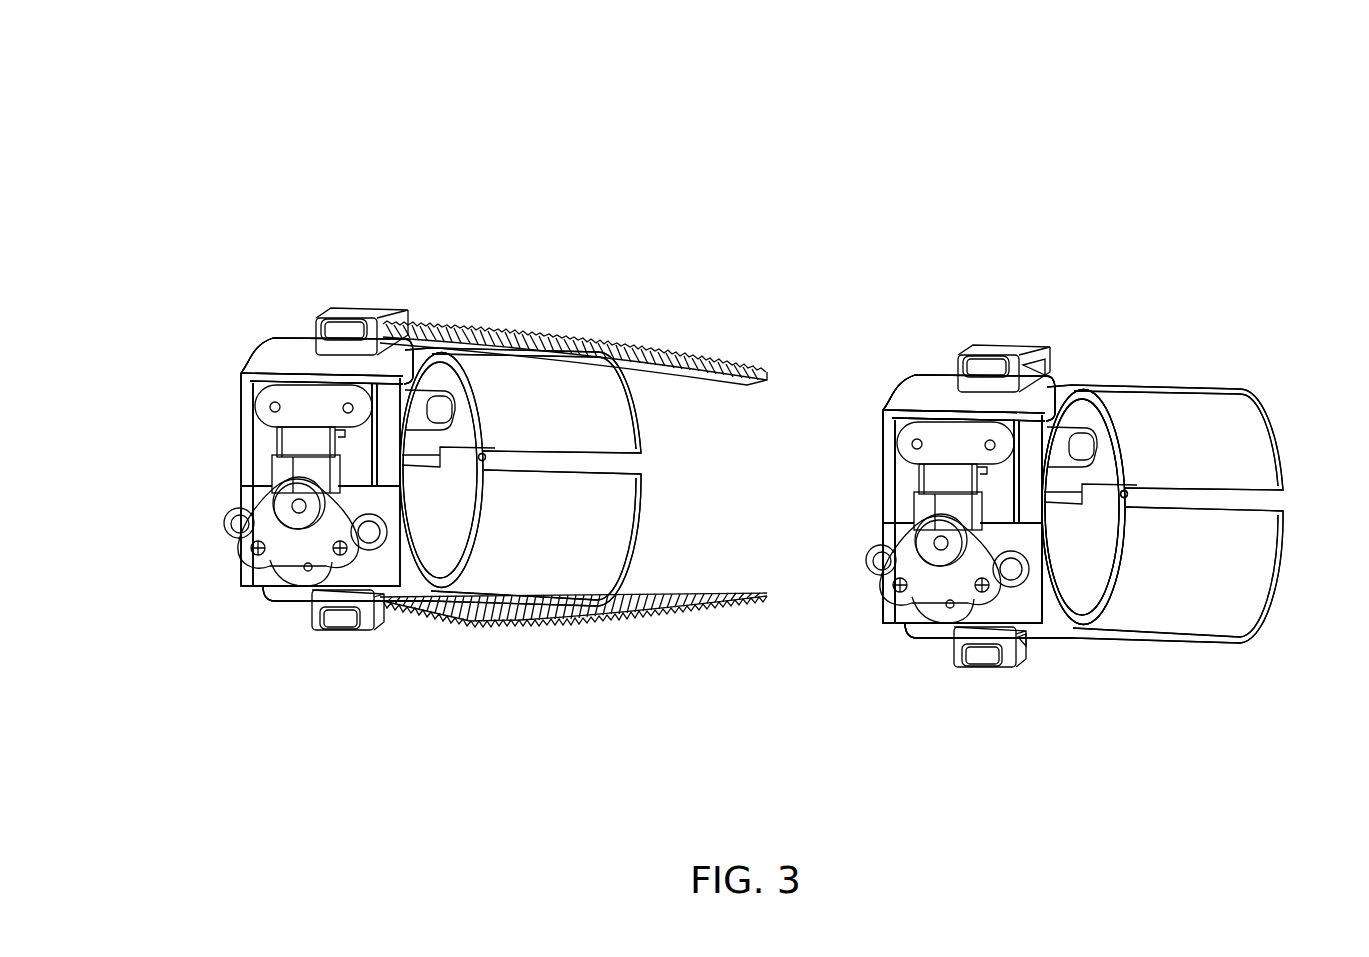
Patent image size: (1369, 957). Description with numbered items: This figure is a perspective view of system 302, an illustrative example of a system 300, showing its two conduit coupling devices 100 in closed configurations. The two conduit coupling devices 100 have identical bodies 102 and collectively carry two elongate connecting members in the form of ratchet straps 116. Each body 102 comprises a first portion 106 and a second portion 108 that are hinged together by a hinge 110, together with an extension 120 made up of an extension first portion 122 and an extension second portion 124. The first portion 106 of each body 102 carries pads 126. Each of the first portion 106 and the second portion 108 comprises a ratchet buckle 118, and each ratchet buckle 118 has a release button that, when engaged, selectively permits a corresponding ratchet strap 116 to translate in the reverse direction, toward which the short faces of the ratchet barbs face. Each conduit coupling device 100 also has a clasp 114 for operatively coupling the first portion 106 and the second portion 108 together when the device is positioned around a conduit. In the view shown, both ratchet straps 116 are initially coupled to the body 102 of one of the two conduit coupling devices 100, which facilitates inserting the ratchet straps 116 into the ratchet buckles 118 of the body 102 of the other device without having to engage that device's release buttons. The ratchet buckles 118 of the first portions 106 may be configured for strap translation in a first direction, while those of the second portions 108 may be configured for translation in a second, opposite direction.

The conduit coupling device 100 is at (565, 253).
The body 102 is at (299, 304).
The first portion 106 is at (258, 348).
The second portion 108 is at (270, 597).
The hinge 110 is at (585, 463).
The clasp 114 is at (282, 442).
The ratchet strap 116 is at (600, 328).
The ratchet buckle 118 is at (352, 310).
The extension 120 is at (492, 346).
The extension first portion 122 is at (637, 405).
The extension second portion 124 is at (638, 506).
The pads 126 is at (452, 395).
The system 300 is at (1201, 94).
The system 302 is at (1084, 119).